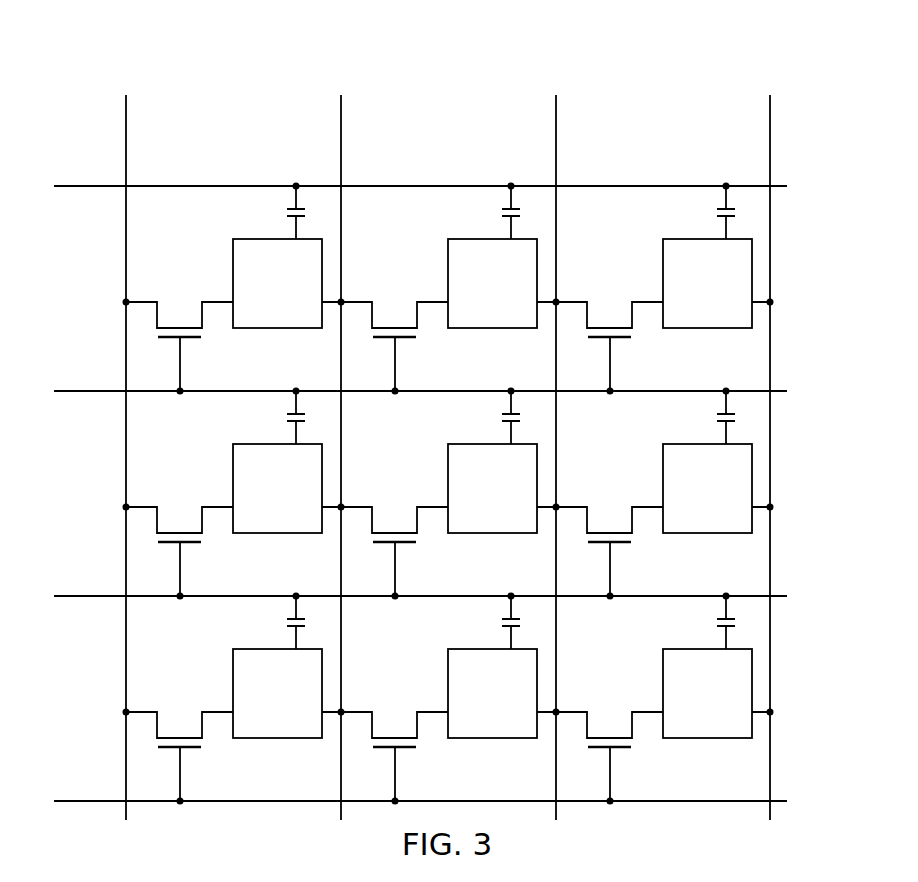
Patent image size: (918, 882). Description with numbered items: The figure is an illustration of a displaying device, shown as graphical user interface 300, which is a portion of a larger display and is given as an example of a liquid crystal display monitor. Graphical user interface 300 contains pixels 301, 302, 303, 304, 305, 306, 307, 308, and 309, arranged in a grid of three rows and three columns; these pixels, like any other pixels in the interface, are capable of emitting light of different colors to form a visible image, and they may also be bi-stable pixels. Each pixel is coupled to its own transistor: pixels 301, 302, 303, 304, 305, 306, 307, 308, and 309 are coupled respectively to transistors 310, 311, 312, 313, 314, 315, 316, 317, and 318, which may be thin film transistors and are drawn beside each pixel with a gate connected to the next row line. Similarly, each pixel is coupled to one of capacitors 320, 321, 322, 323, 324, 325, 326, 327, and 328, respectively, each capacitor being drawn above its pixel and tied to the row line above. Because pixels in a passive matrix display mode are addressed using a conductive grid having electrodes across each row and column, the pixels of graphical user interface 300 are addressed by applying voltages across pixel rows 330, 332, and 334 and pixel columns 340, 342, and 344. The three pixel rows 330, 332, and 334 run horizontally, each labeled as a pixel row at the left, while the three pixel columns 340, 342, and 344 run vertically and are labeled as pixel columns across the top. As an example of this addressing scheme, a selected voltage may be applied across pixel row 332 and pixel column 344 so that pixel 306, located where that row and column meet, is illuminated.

The graphical user interface 300 is at (265, 46).
The pixel 301 is at (294, 297).
The pixel 302 is at (476, 297).
The pixel 303 is at (724, 297).
The pixel 304 is at (294, 502).
The pixel 305 is at (476, 502).
The pixel 306 is at (724, 502).
The pixel 307 is at (294, 707).
The pixel 308 is at (476, 707).
The pixel 309 is at (724, 707).
The transistor 310 is at (168, 339).
The transistor 311 is at (383, 339).
The transistor 312 is at (598, 339).
The transistor 313 is at (168, 544).
The transistor 314 is at (383, 544).
The transistor 315 is at (598, 544).
The transistor 316 is at (168, 749).
The transistor 317 is at (383, 749).
The transistor 318 is at (598, 749).
The capacitor 320 is at (288, 213).
The capacitor 321 is at (503, 213).
The capacitor 322 is at (718, 213).
The capacitor 323 is at (288, 418).
The capacitor 324 is at (503, 418).
The capacitor 325 is at (718, 418).
The capacitor 326 is at (288, 623).
The capacitor 327 is at (503, 623).
The capacitor 328 is at (718, 623).
The pixel row 330 is at (75, 265).
The pixel row 332 is at (75, 470).
The pixel row 334 is at (75, 675).
The pixel column 340 is at (250, 113).
The pixel column 342 is at (465, 113).
The pixel column 344 is at (680, 113).